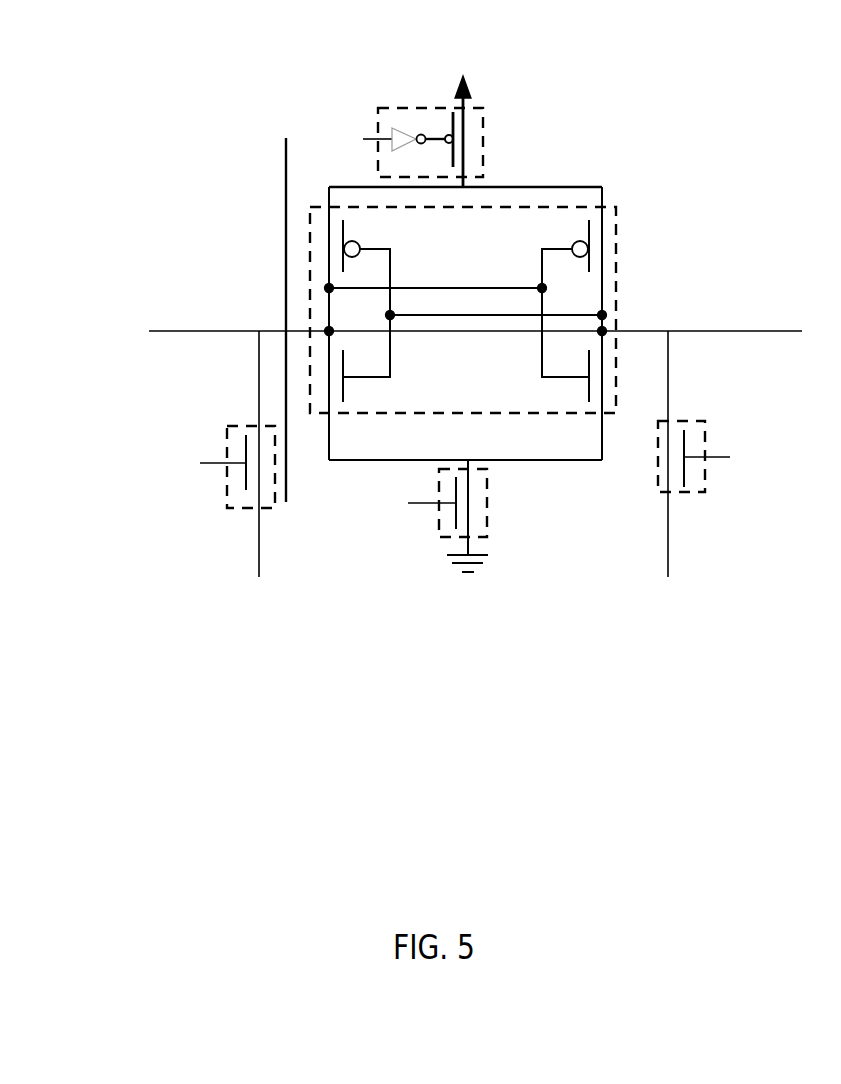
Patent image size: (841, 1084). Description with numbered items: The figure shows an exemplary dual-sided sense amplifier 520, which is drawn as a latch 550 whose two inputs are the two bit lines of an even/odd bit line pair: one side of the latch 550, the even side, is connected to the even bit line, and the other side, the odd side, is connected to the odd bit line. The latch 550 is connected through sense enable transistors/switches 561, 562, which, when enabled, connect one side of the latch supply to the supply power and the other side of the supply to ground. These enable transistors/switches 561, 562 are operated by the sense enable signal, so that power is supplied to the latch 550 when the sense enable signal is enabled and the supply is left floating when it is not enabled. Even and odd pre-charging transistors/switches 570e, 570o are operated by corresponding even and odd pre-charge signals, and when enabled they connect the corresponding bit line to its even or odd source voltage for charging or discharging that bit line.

The dual-sided sense amplifier 520 is at (133, 127).
The latch 550 is at (616, 217).
The sense enable transistor/switch 561 is at (483, 127).
The sense enable transistor/switch 562 is at (487, 486).
The even pre-charging transistor/switch 570e is at (227, 497).
The odd pre-charging transistor/switch 570o is at (680, 492).